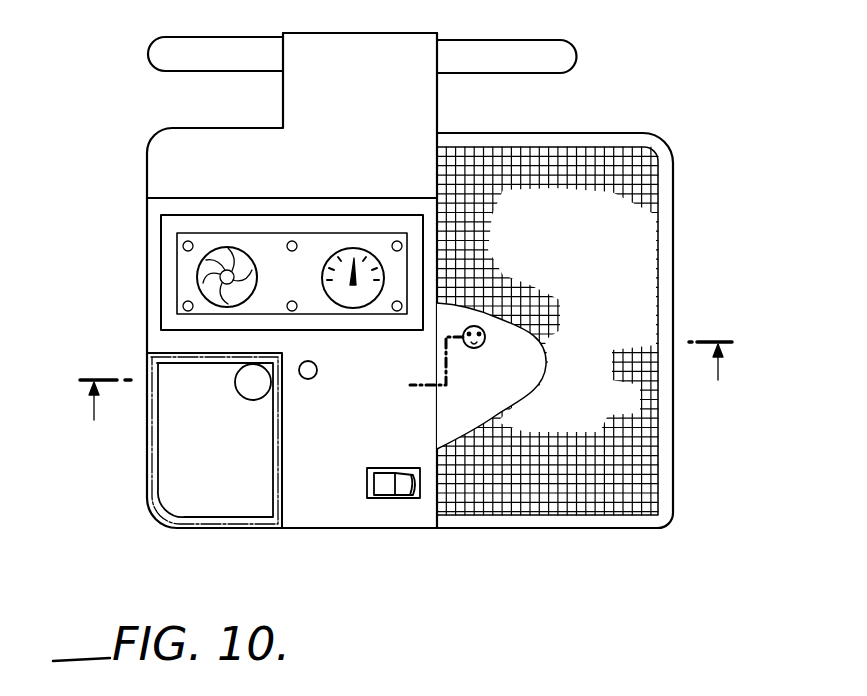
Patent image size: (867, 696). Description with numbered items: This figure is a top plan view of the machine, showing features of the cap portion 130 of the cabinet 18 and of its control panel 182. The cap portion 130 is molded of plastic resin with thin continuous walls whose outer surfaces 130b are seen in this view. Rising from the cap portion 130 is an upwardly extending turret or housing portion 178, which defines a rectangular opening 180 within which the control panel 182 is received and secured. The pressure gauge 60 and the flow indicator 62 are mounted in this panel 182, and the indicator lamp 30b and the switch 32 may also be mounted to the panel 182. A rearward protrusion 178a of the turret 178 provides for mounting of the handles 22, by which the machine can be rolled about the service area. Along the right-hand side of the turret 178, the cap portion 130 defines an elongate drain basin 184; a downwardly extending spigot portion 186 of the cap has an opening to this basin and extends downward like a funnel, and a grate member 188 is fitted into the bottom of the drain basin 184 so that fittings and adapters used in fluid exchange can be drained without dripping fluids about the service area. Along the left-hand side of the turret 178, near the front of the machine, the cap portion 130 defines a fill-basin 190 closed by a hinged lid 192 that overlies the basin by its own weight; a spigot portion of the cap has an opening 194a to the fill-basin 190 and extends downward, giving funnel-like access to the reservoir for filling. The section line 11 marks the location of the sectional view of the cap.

The section line 11- 11 is at (398, 402).
The cabinet 18 is at (681, 186).
The handle 22 is at (194, 40).
The indicator lamp 30b is at (313, 379).
The switch 32 is at (380, 474).
The pressure gauge 60 is at (359, 250).
The flow indicator 62 is at (225, 248).
The cap portion 130 is at (332, 510).
The outer surfaces 130b is at (378, 527).
The turret or housing portion 178 is at (147, 177).
The rearward protrusion 178a is at (441, 106).
The rectangular opening 180 is at (178, 277).
The control panel 182 is at (308, 242).
The drain basin 184 is at (636, 457).
The spigot portion 186 is at (478, 347).
The grate member 188 is at (482, 508).
The fill-basin 190 is at (165, 497).
The hinged lid 192 is at (232, 532).
The opening 194a is at (257, 396).